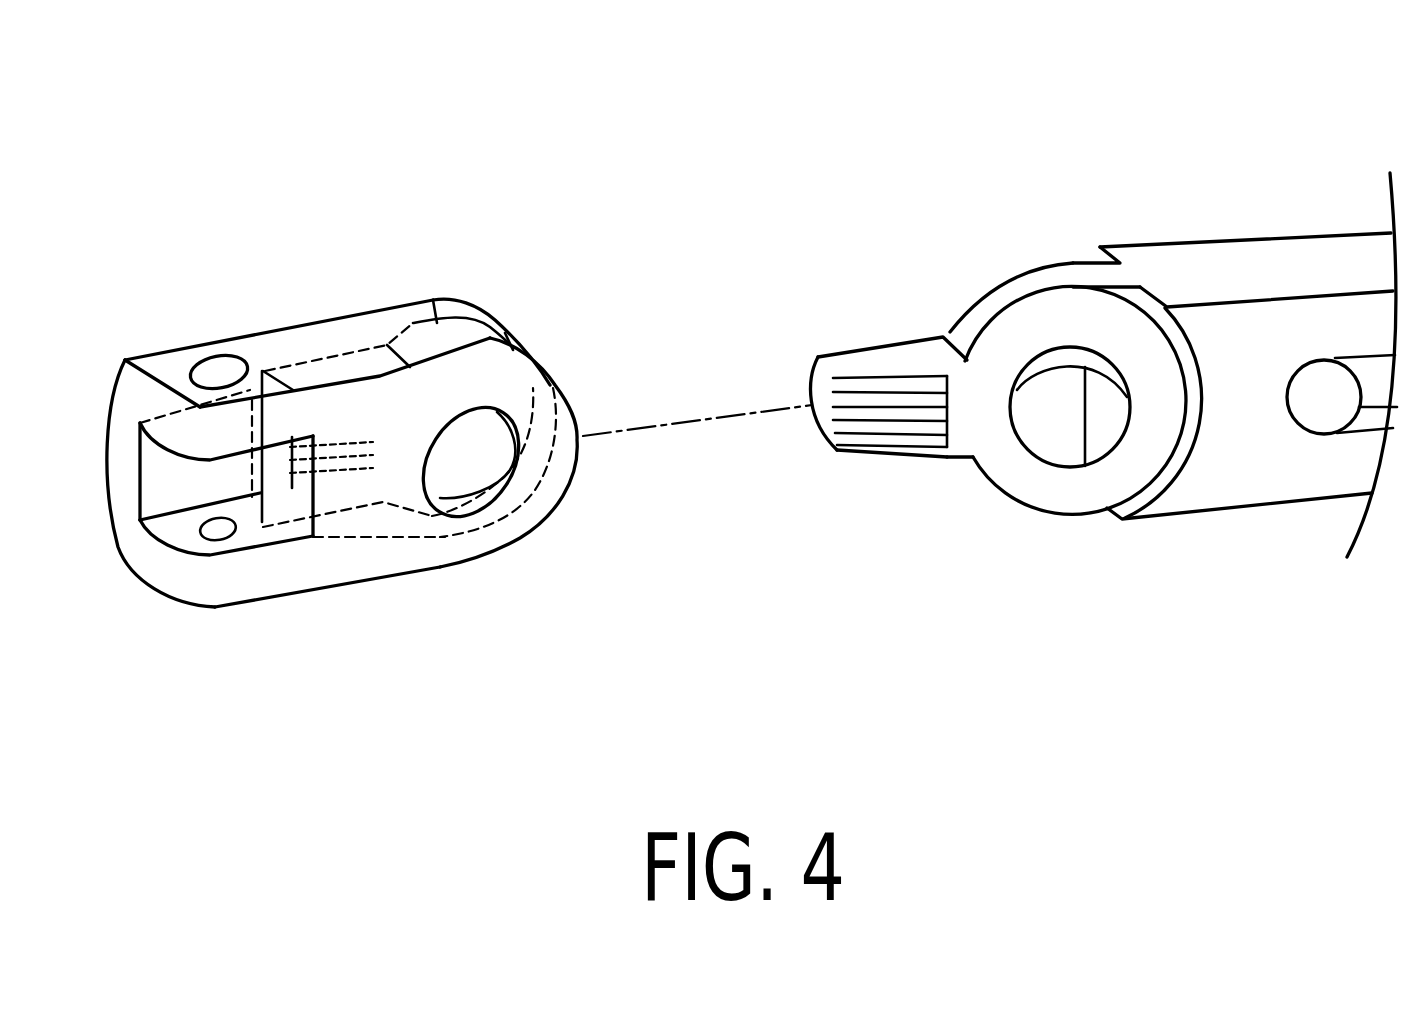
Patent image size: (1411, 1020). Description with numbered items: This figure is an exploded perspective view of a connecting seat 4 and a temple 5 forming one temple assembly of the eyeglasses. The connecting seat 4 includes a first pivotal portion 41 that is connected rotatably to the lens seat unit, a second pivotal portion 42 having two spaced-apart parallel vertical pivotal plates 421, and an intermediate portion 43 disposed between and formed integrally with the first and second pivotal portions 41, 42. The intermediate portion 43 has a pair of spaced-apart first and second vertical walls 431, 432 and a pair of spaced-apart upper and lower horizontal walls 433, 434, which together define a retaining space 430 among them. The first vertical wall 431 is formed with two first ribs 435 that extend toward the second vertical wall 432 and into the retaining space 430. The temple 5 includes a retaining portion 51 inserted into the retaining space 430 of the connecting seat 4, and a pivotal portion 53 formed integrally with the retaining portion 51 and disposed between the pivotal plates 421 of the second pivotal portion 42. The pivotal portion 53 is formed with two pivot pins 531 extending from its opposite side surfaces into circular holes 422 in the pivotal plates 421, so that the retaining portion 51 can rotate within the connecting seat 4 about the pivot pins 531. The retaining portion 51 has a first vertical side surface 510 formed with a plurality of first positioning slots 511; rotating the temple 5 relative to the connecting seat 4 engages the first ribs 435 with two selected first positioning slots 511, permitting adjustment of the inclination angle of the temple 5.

The connecting seat 4 is at (380, 250).
The first pivotal portion 41 is at (180, 573).
The second pivotal portion 42 is at (517, 528).
The intermediate portion 43 is at (310, 567).
The pivotal plates 421 is at (433, 310).
The circular holes 422 is at (475, 443).
The retaining space 430 is at (273, 472).
The first vertical wall 431 is at (397, 547).
The second vertical wall 432 is at (257, 330).
The upper horizontal wall 433 is at (321, 340).
The lower horizontal wall 434 is at (360, 580).
The first ribs 435 is at (378, 434).
The temple 5 is at (1277, 160).
The retaining portion 51 is at (867, 355).
The first positioning slots 511 is at (868, 440).
The first vertical side surface 510 is at (947, 462).
The pivotal portion 53 is at (1017, 287).
The pivot pins 531 is at (1040, 440).